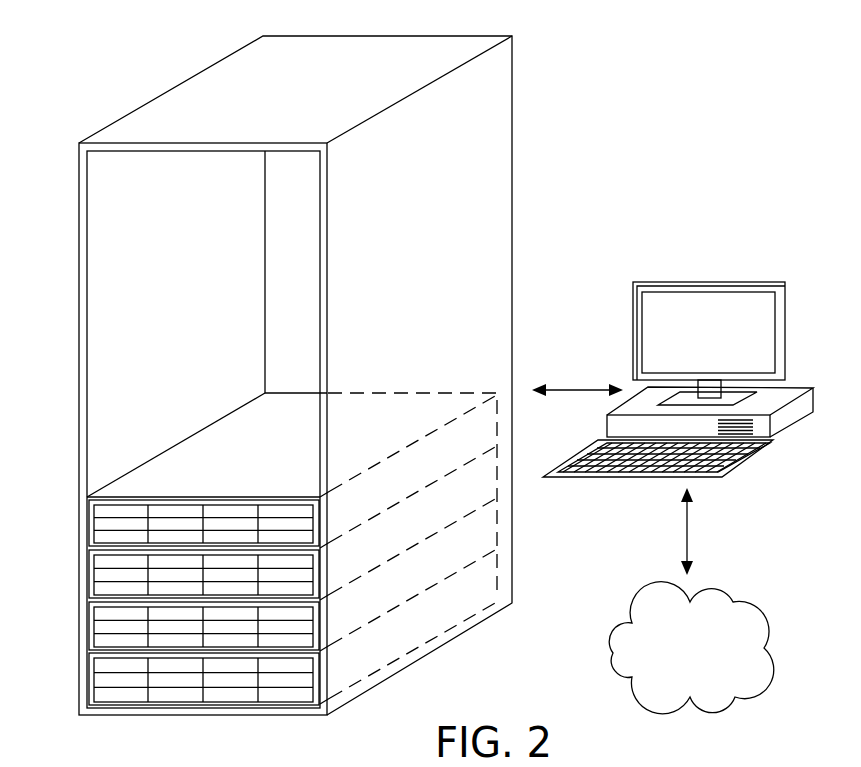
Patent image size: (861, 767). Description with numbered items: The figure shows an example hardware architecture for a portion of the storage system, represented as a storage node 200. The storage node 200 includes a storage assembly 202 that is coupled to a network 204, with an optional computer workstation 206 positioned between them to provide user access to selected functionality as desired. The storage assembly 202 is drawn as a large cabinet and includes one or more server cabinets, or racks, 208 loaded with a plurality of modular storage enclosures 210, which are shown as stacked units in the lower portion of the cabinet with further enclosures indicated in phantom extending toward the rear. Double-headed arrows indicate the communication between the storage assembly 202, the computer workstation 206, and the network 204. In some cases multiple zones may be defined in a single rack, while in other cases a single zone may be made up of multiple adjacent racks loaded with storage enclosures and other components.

The storage node 200 is at (678, 114).
The storage assembly 202 is at (214, 99).
The network 204 is at (757, 600).
The computer workstation 206 is at (732, 280).
The server cabinet 208 is at (78, 375).
The modular storage enclosure 210 is at (223, 472).